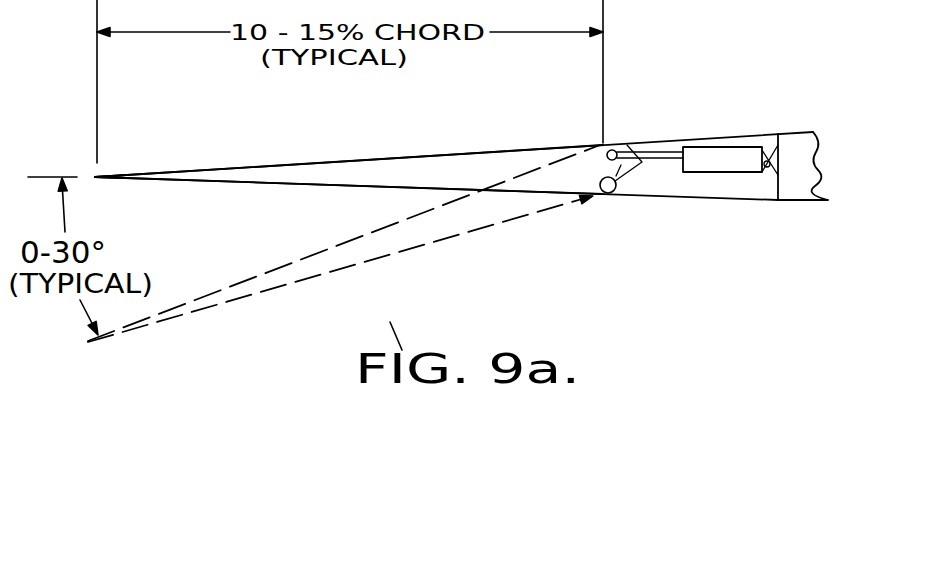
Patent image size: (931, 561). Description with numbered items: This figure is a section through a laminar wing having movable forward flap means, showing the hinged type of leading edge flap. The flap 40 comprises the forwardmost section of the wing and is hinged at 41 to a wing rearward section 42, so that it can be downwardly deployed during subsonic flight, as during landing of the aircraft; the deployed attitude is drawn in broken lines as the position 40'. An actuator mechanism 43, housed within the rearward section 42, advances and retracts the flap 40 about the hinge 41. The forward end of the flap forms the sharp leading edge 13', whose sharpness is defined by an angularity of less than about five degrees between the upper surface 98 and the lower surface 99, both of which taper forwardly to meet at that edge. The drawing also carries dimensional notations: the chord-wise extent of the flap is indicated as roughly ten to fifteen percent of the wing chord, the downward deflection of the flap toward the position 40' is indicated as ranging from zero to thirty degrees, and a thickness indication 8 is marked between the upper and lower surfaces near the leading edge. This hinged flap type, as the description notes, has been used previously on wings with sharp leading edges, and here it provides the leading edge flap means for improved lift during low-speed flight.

The airfoil blade section 8 is at (454, 164).
The leading edge 13' is at (130, 125).
The upper surface 98 is at (179, 172).
The lower surface 99 is at (180, 185).
The flap 40 is at (349, 135).
The broken line position 40' is at (344, 263).
The hinge 41 is at (614, 192).
The wing rearward section 42 is at (747, 200).
The actuator mechanism 43 is at (702, 141).